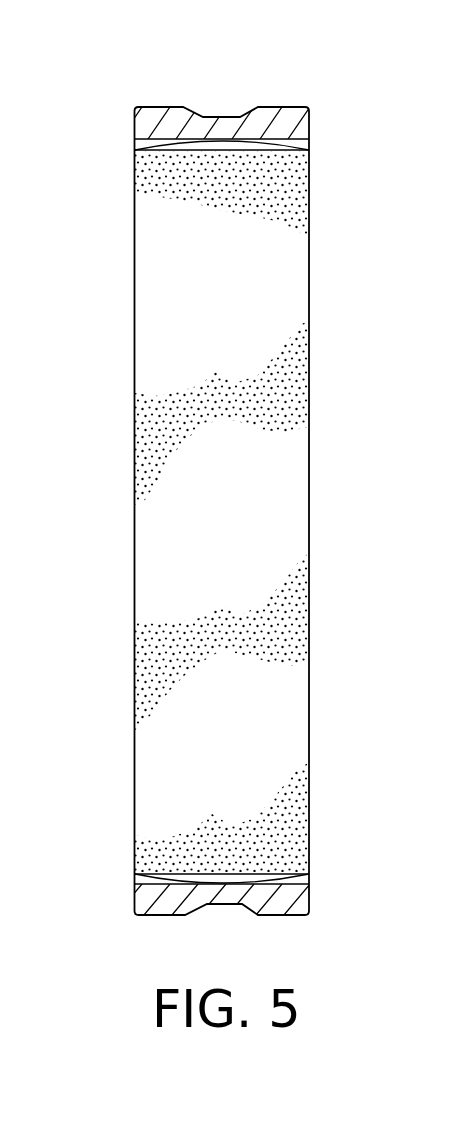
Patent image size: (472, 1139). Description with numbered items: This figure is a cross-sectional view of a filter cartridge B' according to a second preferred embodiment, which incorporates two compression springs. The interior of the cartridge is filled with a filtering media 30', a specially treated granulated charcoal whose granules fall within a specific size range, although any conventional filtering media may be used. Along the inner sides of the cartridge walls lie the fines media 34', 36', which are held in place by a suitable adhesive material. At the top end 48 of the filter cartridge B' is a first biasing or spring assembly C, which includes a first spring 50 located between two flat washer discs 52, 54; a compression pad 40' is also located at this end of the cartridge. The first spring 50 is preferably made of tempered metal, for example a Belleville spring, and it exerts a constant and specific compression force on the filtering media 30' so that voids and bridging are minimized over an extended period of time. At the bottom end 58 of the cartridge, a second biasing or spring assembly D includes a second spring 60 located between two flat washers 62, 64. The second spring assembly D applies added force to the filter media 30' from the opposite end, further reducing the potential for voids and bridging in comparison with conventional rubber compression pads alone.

The filter cartridge B' is at (317, 38).
The first biasing or spring assembly C is at (128, 121).
The second biasing or spring assembly D is at (131, 880).
The compression pad 40' is at (198, 93).
The top end 48 is at (310, 118).
The first spring 50 is at (292, 148).
The flat washer disc 52 is at (272, 152).
The flat washer disc 54 is at (136, 146).
The fines media 36' is at (91, 511).
The fines media 34' is at (353, 511).
The filtering media 30' is at (272, 525).
The flat washer 62 is at (283, 872).
The flat washer 64 is at (137, 872).
The second spring 60 is at (300, 878).
The bottom end 58 is at (305, 900).